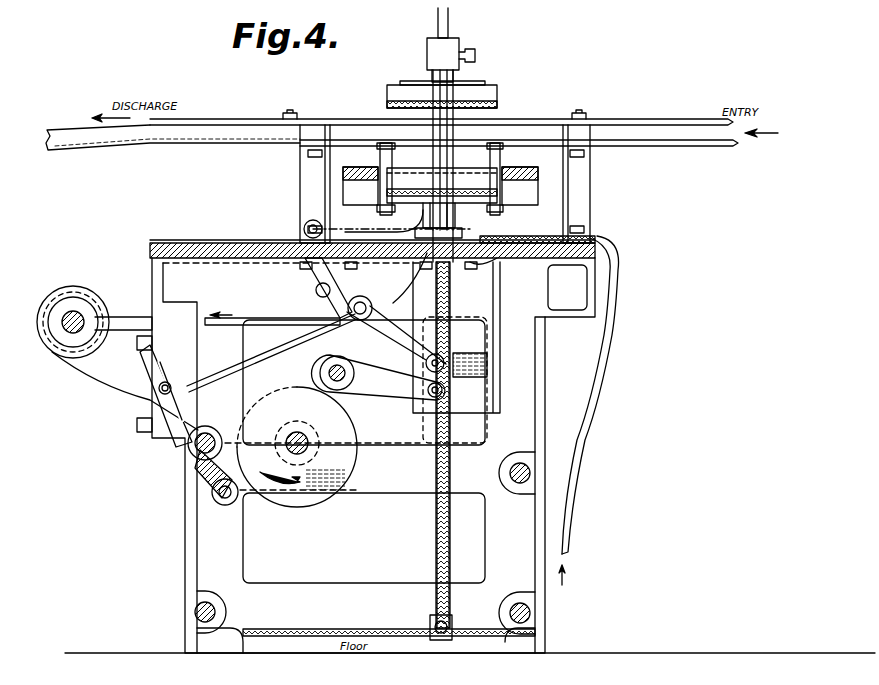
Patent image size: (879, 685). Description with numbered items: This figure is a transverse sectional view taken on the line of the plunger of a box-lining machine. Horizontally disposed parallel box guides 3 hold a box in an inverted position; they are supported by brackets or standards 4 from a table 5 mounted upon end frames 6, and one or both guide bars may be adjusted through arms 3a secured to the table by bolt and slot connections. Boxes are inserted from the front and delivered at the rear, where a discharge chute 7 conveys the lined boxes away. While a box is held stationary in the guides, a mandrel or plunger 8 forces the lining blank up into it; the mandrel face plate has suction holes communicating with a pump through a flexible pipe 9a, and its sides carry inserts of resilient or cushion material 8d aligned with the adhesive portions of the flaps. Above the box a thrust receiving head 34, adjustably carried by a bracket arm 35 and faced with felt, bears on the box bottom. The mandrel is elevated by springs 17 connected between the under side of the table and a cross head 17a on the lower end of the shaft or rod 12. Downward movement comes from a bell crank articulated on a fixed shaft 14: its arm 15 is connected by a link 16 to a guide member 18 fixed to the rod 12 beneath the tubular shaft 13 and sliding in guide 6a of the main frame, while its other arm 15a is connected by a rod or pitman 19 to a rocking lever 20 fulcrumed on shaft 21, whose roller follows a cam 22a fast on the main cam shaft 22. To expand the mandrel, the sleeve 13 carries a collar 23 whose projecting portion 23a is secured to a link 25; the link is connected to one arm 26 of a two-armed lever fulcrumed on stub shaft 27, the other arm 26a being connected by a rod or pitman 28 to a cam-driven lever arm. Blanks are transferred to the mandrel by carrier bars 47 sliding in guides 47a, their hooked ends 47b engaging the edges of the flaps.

The box guides 3 is at (650, 119).
The arms 3a is at (284, 118).
The brackets or standards 4 is at (308, 186).
The table 5 is at (235, 250).
The end frames 6 is at (373, 455).
The guide 6a is at (487, 325).
The discharge chute 7 is at (112, 143).
The mandrel or plunger 8 is at (490, 186).
The inserts of resilient or cushion material 8d is at (497, 203).
The flexible pipe 9a is at (612, 322).
The shaft or rod 12 is at (448, 503).
The tubular shaft 13 is at (450, 296).
The fixed shaft 14 is at (333, 381).
The arm 15 is at (378, 377).
The arm 15a is at (362, 338).
The link 16 is at (450, 391).
The springs 17 is at (452, 334).
The cross head 17a is at (430, 622).
The guide member 18 is at (478, 362).
The rod or pitman 19 is at (250, 353).
The rocking lever 20 is at (200, 430).
The shaft 21 is at (190, 458).
The main cam shaft 22 is at (290, 420).
The cam 22a is at (360, 446).
The collar 23 is at (500, 259).
The projecting portion 23a is at (401, 282).
The link 25 is at (372, 230).
The arm 26 is at (304, 232).
The arm 26a is at (372, 296).
The stub shaft 27 is at (312, 289).
The rod or pitman 28 is at (232, 326).
The thrust receiving head 34 is at (487, 99).
The bracket arm 35 is at (462, 48).
The carrier bars 47 is at (365, 166).
The guides 47a is at (343, 173).
The hooked ends 47b is at (370, 165).